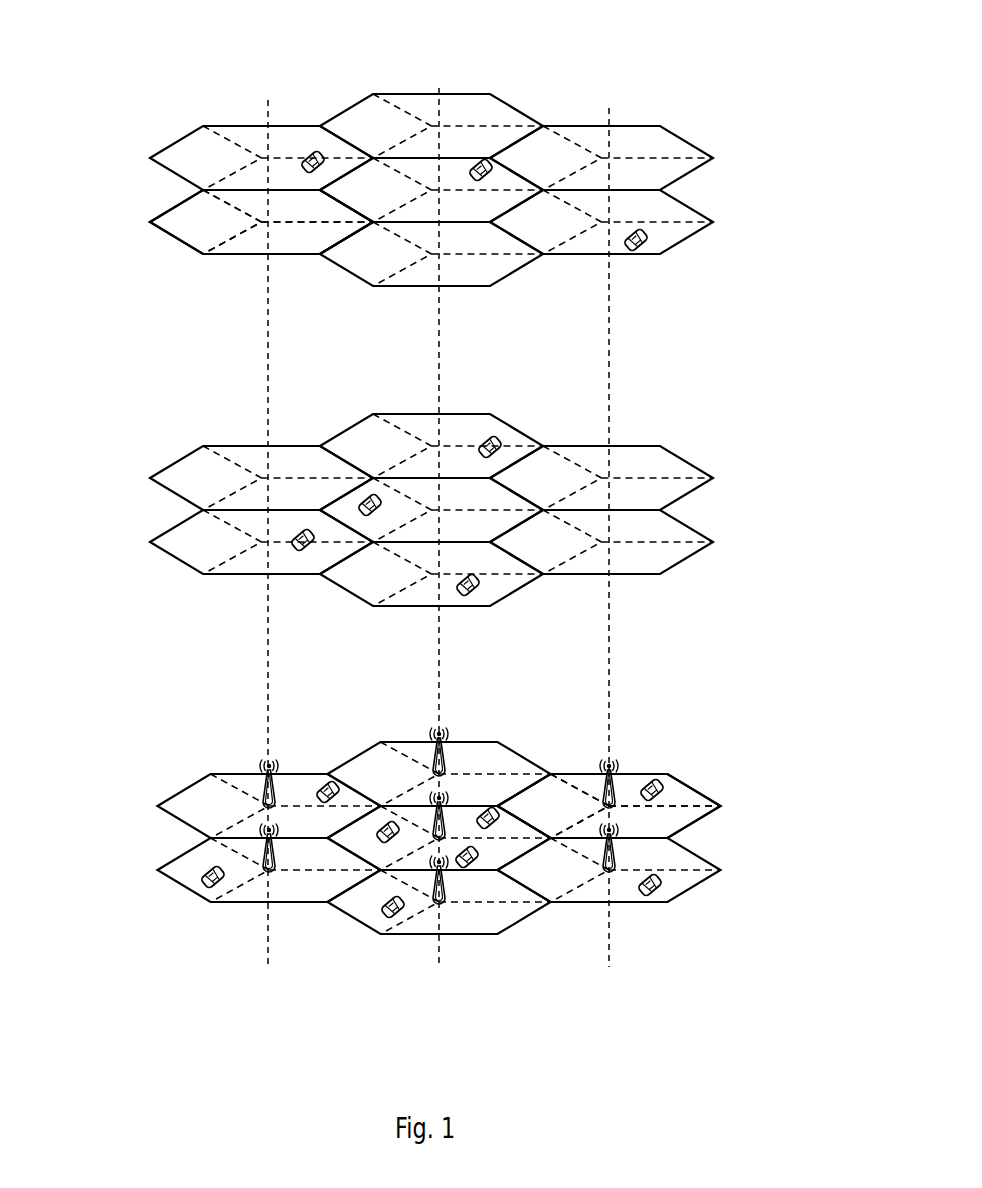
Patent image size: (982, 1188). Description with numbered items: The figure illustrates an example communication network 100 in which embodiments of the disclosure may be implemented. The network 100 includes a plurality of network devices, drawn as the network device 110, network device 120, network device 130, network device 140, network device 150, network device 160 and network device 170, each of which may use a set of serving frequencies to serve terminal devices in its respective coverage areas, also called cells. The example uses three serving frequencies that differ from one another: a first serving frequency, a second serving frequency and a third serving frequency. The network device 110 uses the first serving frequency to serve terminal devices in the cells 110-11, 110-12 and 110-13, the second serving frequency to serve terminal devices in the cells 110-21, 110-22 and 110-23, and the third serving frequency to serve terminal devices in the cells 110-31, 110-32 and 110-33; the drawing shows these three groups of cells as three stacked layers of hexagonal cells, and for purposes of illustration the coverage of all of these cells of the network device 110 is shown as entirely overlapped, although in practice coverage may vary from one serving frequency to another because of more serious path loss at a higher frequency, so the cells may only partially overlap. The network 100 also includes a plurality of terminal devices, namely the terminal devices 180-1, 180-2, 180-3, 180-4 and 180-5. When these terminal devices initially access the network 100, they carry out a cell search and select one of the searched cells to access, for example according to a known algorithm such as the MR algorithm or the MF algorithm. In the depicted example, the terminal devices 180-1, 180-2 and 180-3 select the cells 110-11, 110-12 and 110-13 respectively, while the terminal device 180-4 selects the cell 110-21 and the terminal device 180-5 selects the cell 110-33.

The communication network 100 is at (158, 36).
The network device 110 is at (447, 798).
The cell 110-11 is at (360, 857).
The cell 110-12 is at (523, 857).
The cell 110-13 is at (517, 818).
The cell 110-21 is at (367, 533).
The cell 110-22 is at (507, 533).
The cell 110-23 is at (503, 488).
The cell 110-31 is at (353, 208).
The cell 110-32 is at (505, 213).
The cell 110-33 is at (510, 169).
The network device 120 is at (615, 760).
The network device 130 is at (445, 728).
The network device 140 is at (275, 757).
The network device 150 is at (265, 834).
The network device 160 is at (438, 903).
The network device 170 is at (613, 833).
The terminal device 180-1 is at (385, 838).
The terminal device 180-2 is at (468, 867).
The terminal device 180-3 is at (493, 822).
The terminal device 180-4 is at (380, 502).
The terminal device 180-5 is at (482, 162).